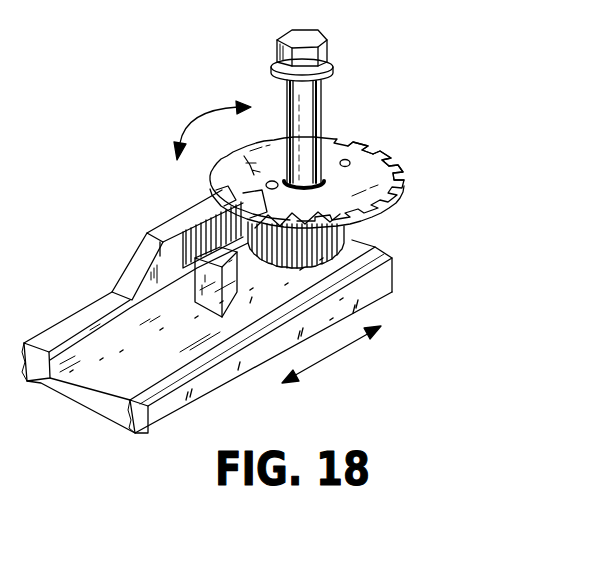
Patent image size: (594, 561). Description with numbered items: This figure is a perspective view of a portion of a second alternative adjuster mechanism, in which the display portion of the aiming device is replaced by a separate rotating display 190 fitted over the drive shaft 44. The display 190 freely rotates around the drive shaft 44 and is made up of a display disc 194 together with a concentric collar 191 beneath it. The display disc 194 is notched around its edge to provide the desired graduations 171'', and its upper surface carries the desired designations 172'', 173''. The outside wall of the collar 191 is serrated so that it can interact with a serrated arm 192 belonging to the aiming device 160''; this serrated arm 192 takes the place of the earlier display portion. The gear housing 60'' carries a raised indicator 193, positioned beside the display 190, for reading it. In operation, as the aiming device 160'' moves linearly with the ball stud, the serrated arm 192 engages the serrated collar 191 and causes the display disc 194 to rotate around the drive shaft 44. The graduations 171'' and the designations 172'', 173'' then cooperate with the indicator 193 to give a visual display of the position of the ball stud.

The drive shaft 44 is at (322, 98).
The gear housing 60'' is at (207, 373).
The aiming device 160'' is at (122, 235).
The graduations 171'' is at (415, 122).
The designations 172'' is at (450, 155).
The designations 173'' is at (479, 186).
The rotating display 190 is at (405, 224).
The collar 191 is at (381, 256).
The serrated arm 192 is at (171, 238).
The raised indicator 193 is at (232, 293).
The display disc 194 is at (261, 137).